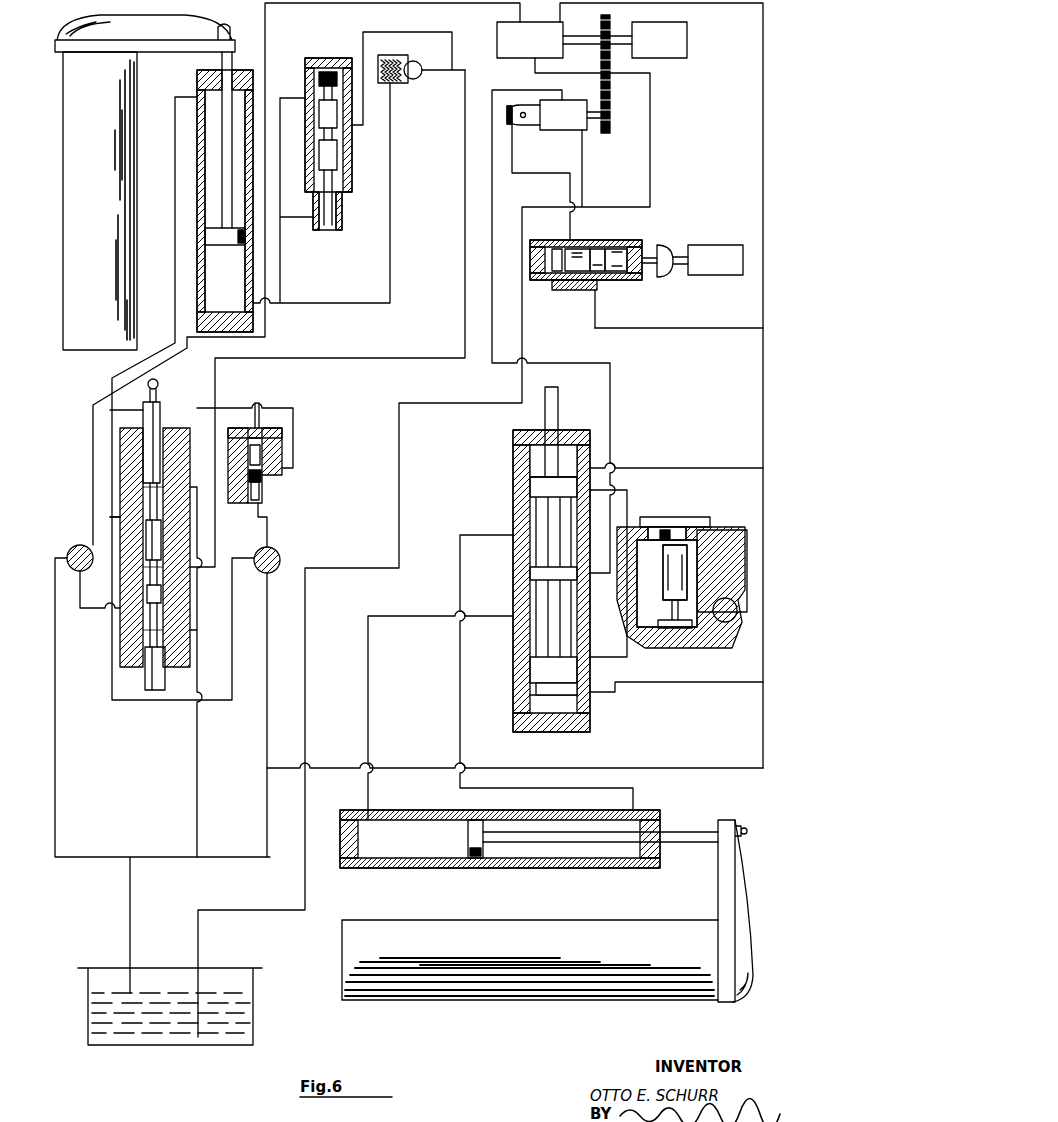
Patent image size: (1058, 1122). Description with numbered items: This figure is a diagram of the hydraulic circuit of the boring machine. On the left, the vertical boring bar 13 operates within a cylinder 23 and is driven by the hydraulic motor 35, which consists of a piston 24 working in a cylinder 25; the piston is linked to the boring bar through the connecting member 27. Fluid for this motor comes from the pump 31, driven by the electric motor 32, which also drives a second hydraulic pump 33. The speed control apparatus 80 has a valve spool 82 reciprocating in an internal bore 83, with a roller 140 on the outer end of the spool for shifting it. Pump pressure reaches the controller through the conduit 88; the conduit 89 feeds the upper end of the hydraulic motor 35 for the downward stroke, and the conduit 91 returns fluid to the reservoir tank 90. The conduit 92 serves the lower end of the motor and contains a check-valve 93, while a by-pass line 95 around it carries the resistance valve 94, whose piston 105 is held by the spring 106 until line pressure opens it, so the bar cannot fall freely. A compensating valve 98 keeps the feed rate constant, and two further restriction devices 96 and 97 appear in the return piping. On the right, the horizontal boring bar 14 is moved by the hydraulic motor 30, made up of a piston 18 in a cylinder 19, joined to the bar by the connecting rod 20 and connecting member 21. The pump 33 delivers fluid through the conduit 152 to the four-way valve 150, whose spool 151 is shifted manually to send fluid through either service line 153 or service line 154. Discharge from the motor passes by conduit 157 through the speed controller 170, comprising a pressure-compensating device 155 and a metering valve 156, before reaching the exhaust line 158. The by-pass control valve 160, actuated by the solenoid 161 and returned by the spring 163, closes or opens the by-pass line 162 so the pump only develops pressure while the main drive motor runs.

The vertical boring bar 13 is at (76, 170).
The connecting member 27 is at (57, 43).
The hydraulic motor 35 is at (204, 168).
The cylinder 25 is at (196, 281).
The piston 24 is at (239, 244).
The cylinder 23 is at (246, 302).
The conduit 89 is at (169, 294).
The conduit 88 is at (370, 3).
The conduit 92 is at (464, 130).
The by-pass line 95 is at (280, 299).
The check-valve 93 is at (406, 85).
The spring 106 is at (332, 56).
The resistance valve 94 is at (350, 183).
The piston 105 is at (328, 229).
The pump 31 is at (548, 24).
The electric motor 32 is at (688, 46).
The hydraulic pump 33 is at (570, 102).
The conduit 152 is at (494, 216).
The by-pass control valve 160 is at (630, 242).
The solenoid 161 is at (720, 244).
The spring 163 is at (618, 290).
The by-pass line 162 is at (702, 313).
The roller 140 is at (160, 384).
The speed control apparatus 80 is at (170, 508).
The valve spool 82 is at (142, 428).
The conduit 91 is at (196, 426).
The internal bore 83 is at (140, 668).
The compensating valve 98 is at (282, 447).
The restriction valve 96 is at (73, 548).
The restriction valve 97 is at (278, 552).
The exhaust line 158 is at (752, 730).
The 4-way valve 150 is at (593, 448).
The spool 151 is at (560, 426).
The service line 153 is at (474, 533).
The service line 154 is at (492, 600).
The conduit 157 is at (620, 658).
The pressure-compensating device 155 is at (638, 595).
The speed controller 170 is at (692, 507).
The metering valve 156 is at (728, 626).
The hydraulic motor 30 is at (526, 808).
The piston 18 is at (468, 838).
The cylinder 19 is at (564, 872).
The connecting rod 20 is at (712, 830).
The connecting member 21 is at (748, 922).
The horizontal boring bar 14 is at (482, 926).
The reservoir tank 90 is at (153, 970).